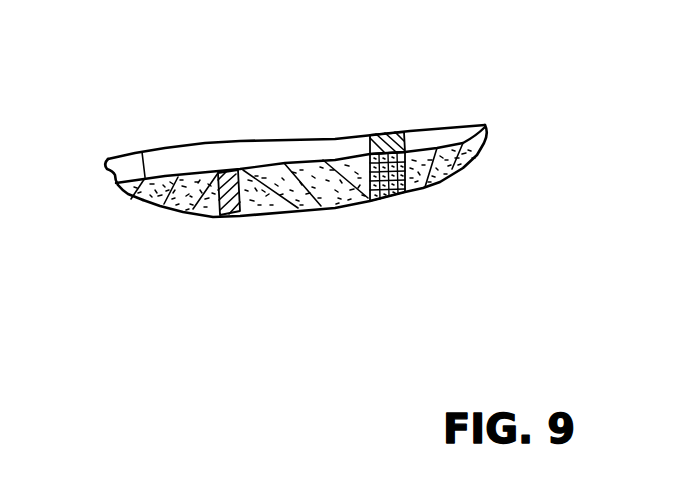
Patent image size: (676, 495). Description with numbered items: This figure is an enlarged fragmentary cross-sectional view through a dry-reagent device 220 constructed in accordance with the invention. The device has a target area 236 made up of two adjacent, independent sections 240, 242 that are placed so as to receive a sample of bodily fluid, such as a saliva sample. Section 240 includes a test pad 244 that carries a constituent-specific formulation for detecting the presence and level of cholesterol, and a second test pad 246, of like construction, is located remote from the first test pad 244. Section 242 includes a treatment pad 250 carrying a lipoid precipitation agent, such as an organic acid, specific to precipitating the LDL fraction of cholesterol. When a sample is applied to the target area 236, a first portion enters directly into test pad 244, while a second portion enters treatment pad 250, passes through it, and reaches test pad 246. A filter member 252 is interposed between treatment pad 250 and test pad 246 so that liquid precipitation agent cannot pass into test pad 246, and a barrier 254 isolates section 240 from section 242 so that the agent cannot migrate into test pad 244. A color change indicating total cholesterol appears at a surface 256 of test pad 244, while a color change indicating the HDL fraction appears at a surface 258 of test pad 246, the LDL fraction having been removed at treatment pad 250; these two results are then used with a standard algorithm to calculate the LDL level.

The dry-reagent device 220 is at (390, 126).
The target area 236 is at (226, 171).
The section 240 is at (196, 163).
The section 242 is at (316, 150).
The test pad 244 is at (166, 176).
The second test pad 246 is at (456, 143).
The treatment pad 250 is at (271, 165).
The filter member 252 is at (383, 200).
The barrier 254 is at (227, 214).
The surface 256 is at (136, 153).
The surface 258 is at (489, 127).